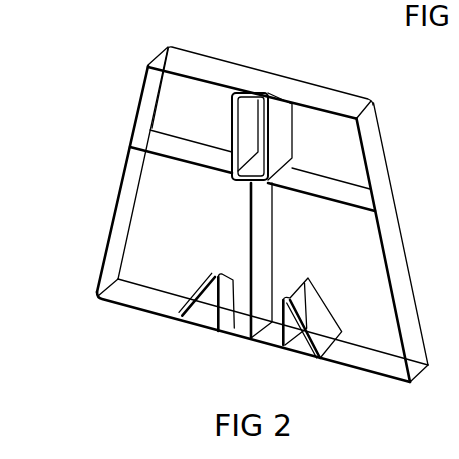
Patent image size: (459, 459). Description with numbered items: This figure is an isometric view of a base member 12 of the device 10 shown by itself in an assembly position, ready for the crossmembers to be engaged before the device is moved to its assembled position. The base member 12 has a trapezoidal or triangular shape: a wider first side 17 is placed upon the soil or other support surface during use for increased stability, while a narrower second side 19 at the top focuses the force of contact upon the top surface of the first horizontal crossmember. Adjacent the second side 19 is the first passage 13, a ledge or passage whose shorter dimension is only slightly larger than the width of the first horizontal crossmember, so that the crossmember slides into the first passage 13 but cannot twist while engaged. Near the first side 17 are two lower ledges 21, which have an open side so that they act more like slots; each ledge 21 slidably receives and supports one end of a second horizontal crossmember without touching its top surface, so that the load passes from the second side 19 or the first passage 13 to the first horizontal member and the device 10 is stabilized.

The device 10 is at (303, 66).
The base member 12 is at (141, 98).
The first passage 13 is at (252, 134).
The first side 17 is at (143, 298).
The second side 19 is at (205, 72).
The ledge 21 is at (245, 322).